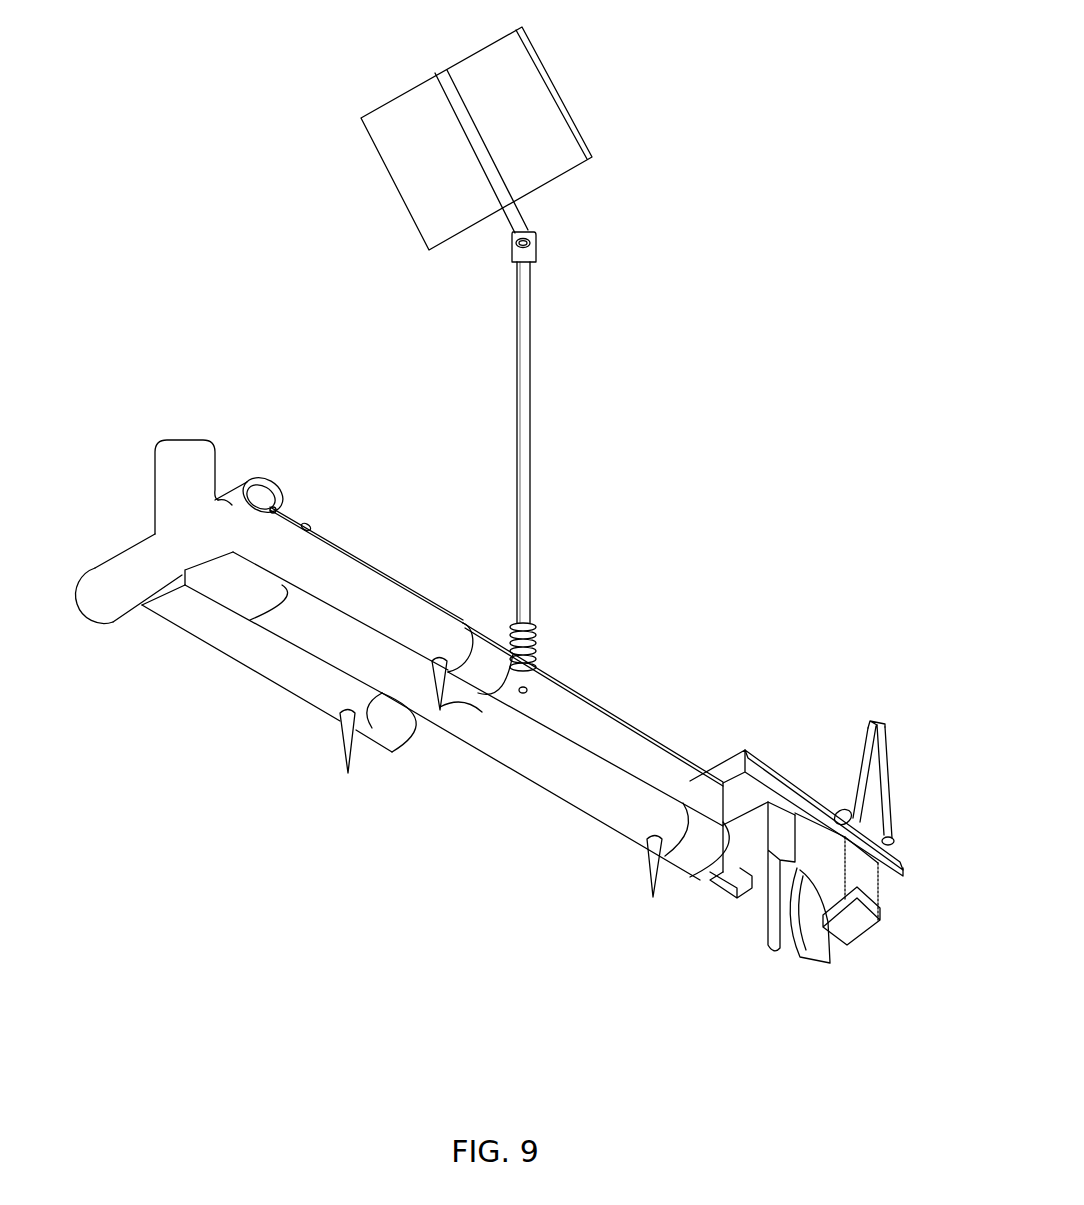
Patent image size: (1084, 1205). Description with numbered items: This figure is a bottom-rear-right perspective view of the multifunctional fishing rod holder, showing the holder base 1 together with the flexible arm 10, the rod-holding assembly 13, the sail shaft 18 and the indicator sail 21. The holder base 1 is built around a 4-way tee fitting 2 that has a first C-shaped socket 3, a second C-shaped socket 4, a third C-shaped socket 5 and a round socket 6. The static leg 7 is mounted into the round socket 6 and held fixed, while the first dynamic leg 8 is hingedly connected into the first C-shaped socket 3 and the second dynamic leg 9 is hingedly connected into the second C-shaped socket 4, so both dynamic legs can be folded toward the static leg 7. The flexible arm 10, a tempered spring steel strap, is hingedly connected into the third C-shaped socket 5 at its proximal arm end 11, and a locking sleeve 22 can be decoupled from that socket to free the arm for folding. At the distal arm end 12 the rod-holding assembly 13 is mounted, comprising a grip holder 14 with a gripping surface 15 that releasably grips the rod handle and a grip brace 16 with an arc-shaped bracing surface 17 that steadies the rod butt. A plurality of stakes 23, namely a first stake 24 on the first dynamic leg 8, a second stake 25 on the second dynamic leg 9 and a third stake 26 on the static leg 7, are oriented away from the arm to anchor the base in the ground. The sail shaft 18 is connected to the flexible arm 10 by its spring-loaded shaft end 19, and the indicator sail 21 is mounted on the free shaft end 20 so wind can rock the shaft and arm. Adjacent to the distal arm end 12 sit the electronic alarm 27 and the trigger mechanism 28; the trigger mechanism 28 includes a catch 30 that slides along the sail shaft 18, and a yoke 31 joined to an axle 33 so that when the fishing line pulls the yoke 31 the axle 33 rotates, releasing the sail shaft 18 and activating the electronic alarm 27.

The holder base 1 is at (426, 696).
The 4-way tee fitting 2 is at (177, 510).
The first C-shaped socket 3 is at (272, 498).
The second C-shaped socket 4 is at (98, 568).
The third C-shaped socket 5 is at (176, 450).
The round socket 6 is at (262, 586).
The static leg 7 is at (545, 790).
The first dynamic leg 8 is at (392, 590).
The second dynamic leg 9 is at (250, 672).
The flexible arm 10 is at (613, 712).
The proximal arm end 11 is at (223, 486).
The distal arm end 12 is at (905, 877).
The rod-holding assembly 13 is at (816, 862).
The grip holder 14 is at (880, 930).
The gripping surface 15 is at (830, 958).
The grip brace 16 is at (715, 893).
The bracing surface 17 is at (760, 910).
The sail shaft 18 is at (531, 380).
The spring-loaded shaft end 19 is at (539, 640).
The free shaft end 20 is at (529, 212).
The indicator sail 21 is at (483, 57).
The locking sleeve 22 is at (303, 528).
The plurality of stakes 23 is at (459, 788).
The first stake 24 is at (462, 712).
The second stake 25 is at (340, 738).
The third stake 26 is at (650, 862).
The electronic alarm 27 is at (743, 740).
The trigger mechanism 28 is at (849, 744).
The catch 30 is at (512, 262).
The yoke 31 is at (863, 748).
The axle 33 is at (893, 855).